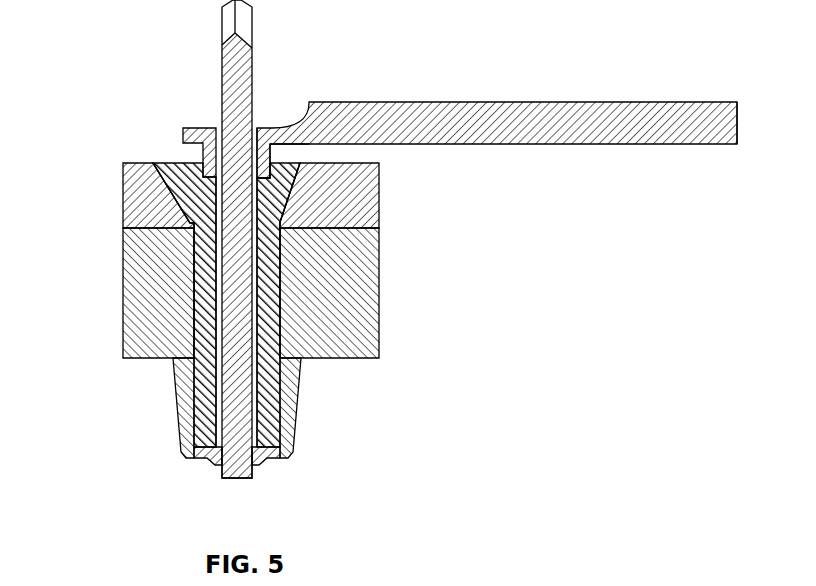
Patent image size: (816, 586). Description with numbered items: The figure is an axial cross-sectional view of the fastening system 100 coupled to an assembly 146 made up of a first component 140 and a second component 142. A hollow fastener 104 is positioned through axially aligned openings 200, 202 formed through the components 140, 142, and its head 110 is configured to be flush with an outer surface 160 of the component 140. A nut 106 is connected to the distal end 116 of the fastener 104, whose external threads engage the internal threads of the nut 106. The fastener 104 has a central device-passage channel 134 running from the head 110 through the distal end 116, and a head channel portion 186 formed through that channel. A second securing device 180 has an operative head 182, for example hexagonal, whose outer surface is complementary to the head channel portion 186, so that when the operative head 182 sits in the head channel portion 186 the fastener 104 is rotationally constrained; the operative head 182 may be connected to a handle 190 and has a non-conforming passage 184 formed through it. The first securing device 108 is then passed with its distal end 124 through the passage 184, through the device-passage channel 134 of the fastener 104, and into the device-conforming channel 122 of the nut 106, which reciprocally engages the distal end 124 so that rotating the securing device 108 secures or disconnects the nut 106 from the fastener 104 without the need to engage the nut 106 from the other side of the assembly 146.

The fastening system 100 is at (190, 57).
The fastener 104 is at (281, 303).
The nut 106 is at (270, 431).
The securing device 108 is at (253, 50).
The head 110 is at (156, 162).
The distal end 116 is at (281, 382).
The device-conforming channel 122 is at (253, 464).
The distal end 124 is at (227, 479).
The device-passage channel 134 is at (288, 198).
The first component 140 is at (264, 168).
The second component 142 is at (380, 274).
The assembly 146 is at (77, 163).
The outer surface 160 is at (133, 162).
The securing device 180 is at (470, 102).
The operative head 182 is at (200, 127).
The passage 184 is at (256, 127).
The head channel portion 186 is at (272, 161).
The handle 190 is at (637, 102).
The opening 200 is at (190, 223).
The opening 202 is at (205, 325).